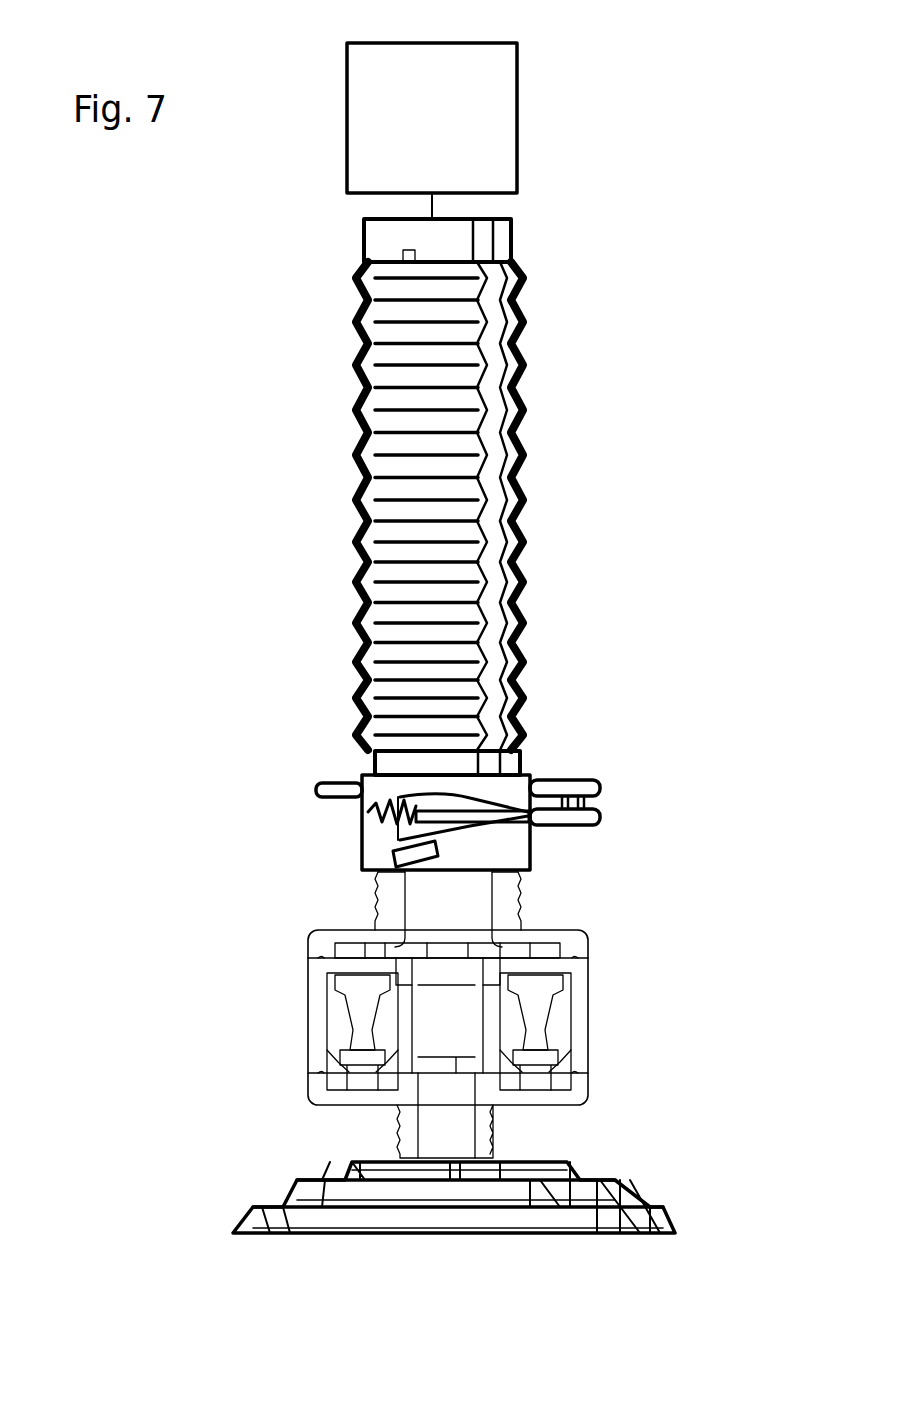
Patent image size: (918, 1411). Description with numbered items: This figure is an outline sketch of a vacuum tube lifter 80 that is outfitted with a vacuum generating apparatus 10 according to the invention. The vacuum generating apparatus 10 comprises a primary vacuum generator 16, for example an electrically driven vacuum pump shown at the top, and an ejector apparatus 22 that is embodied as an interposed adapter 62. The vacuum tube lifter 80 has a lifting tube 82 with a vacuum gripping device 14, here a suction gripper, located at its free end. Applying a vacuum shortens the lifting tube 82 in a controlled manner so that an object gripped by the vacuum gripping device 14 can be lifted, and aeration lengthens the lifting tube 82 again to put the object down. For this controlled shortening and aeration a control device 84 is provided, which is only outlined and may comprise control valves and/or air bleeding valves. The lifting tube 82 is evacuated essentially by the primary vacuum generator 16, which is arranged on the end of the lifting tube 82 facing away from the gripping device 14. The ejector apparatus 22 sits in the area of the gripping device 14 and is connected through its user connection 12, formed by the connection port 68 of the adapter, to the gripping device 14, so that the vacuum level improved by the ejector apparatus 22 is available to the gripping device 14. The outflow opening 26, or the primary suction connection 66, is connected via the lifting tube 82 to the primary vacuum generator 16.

The vacuum generating apparatus 10 is at (314, 910).
The user connection 12 is at (584, 1115).
The connection port 68 is at (453, 1130).
The vacuum gripping device 14 is at (378, 1247).
The primary vacuum generator 16 is at (413, 131).
The ejector apparatus 22 is at (568, 1017).
The interposed adapter 62 is at (595, 970).
The outflow opening 26 is at (578, 909).
The connection port 66 is at (452, 885).
The vacuum tube lifter 80 is at (677, 192).
The lifting tube 82 is at (522, 443).
The control device 84 is at (540, 848).